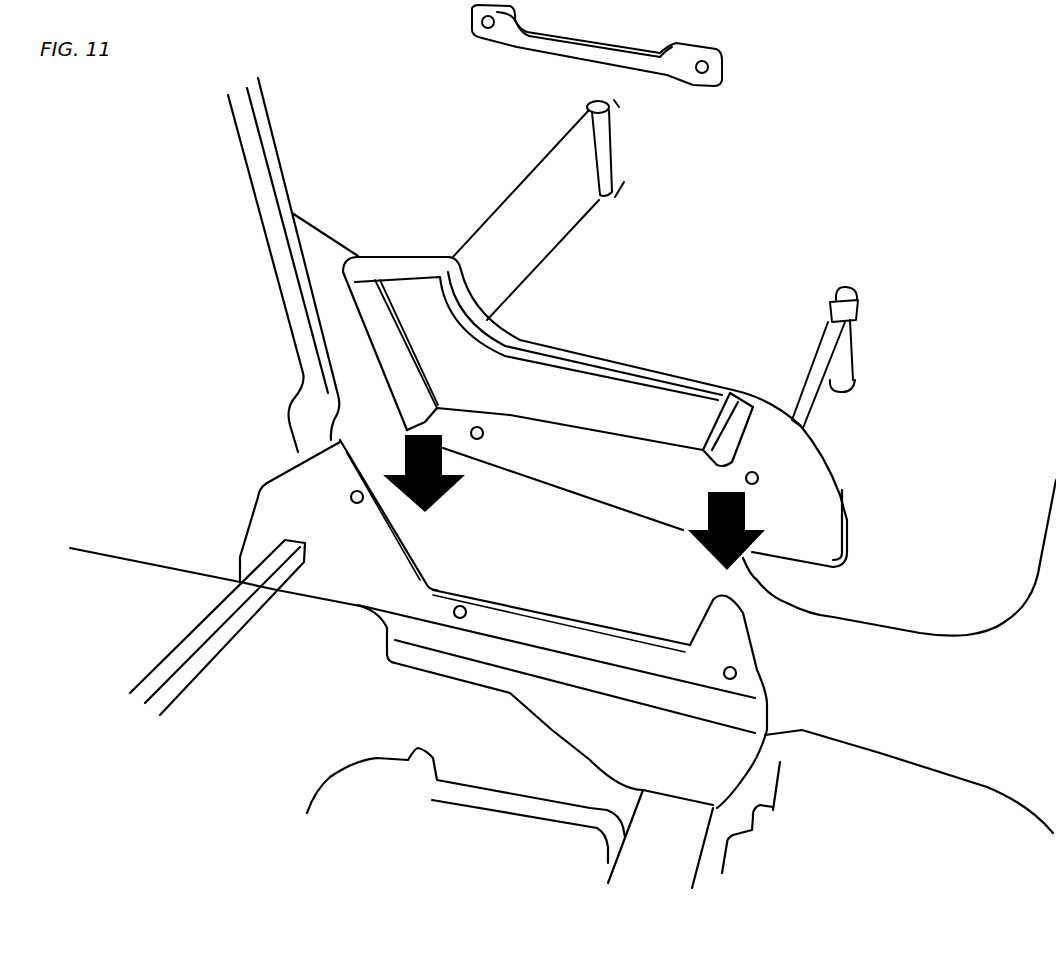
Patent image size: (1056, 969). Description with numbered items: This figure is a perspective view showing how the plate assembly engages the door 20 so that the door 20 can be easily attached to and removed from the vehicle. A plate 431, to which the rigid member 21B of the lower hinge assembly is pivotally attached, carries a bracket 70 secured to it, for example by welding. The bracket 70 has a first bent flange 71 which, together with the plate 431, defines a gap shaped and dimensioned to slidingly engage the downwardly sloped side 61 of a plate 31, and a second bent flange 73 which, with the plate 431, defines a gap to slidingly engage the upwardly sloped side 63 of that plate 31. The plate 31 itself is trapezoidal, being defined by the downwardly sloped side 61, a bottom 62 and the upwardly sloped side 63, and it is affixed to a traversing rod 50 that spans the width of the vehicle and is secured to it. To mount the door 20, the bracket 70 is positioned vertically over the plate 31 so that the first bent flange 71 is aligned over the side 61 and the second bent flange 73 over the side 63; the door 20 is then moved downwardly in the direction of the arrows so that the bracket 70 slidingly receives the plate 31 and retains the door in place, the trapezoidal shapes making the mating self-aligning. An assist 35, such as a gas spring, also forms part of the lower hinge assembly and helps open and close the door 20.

The door 20 is at (884, 129).
The rigid member 21B is at (536, 236).
The bracket 70 is at (594, 406).
The first bent flange 71 is at (393, 357).
The second bent flange 73 is at (733, 438).
The plate 431 is at (606, 480).
The assist 35 is at (807, 410).
The plate 31 is at (364, 566).
The downwardly sloped side 61 is at (407, 538).
The bottom 62 is at (568, 617).
The upwardly sloped side 63 is at (703, 623).
The traversing rod 50 is at (217, 647).